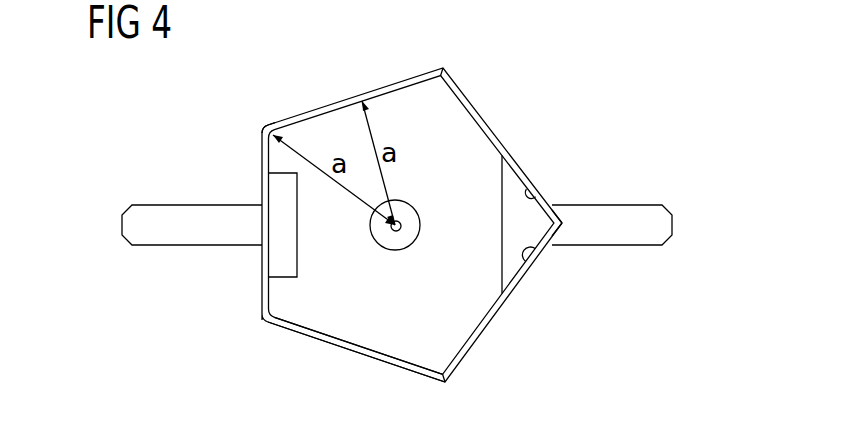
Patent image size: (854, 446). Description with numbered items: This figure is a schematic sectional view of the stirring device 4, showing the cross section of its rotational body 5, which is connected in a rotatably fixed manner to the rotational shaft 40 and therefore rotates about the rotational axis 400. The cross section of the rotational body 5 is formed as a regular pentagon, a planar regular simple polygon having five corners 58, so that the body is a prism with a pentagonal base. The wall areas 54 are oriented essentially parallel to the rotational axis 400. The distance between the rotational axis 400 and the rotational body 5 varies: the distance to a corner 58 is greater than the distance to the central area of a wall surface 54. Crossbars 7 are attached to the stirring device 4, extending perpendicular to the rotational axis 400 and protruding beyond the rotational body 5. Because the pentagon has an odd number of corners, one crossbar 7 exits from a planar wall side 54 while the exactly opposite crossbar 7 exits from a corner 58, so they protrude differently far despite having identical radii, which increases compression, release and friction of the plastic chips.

The stirring device 4 is at (634, 289).
The rotational body 5 is at (503, 114).
The crossbars 7 is at (128, 225).
The rotational shaft 40 is at (404, 225).
The rotational axis 400 is at (397, 232).
The wall areas 54 is at (340, 352).
The corners 58 is at (262, 128).